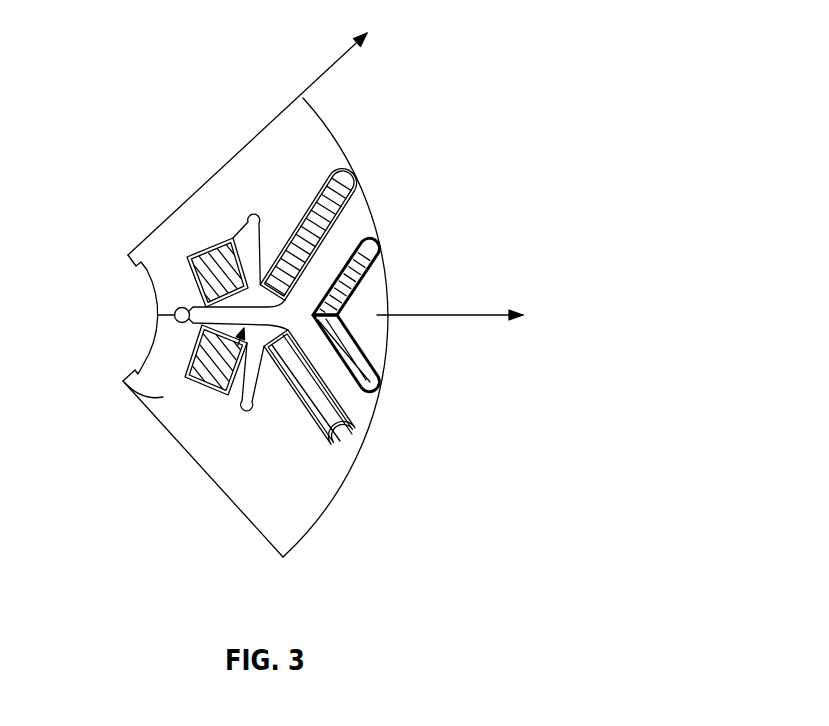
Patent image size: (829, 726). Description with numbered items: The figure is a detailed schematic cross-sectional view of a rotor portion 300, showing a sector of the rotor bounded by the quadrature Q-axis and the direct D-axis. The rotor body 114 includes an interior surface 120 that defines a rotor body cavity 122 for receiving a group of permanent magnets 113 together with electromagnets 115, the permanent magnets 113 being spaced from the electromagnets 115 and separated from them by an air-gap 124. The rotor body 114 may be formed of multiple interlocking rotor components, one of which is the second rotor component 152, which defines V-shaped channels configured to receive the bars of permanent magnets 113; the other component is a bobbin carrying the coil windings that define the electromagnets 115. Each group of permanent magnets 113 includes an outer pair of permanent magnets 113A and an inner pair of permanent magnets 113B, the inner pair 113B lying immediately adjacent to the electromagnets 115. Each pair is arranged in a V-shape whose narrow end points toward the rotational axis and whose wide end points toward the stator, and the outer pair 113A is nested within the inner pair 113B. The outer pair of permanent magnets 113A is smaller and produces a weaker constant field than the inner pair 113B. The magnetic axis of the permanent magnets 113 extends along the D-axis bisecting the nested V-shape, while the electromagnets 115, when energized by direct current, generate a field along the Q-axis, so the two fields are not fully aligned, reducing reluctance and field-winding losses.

The rotor segment 300 is at (540, 54).
The permanent magnets 113 is at (352, 218).
The outer pair of permanent magnets 113A is at (380, 251).
The inner pair of permanent magnets 113B is at (358, 436).
The air-gap 124 is at (368, 366).
The electromagnets 115 is at (215, 270).
The rotor body cavity 122 is at (180, 438).
The interior surface 120 is at (200, 307).
The rotor body 114 is at (123, 381).
The second rotor component 152 is at (270, 494).